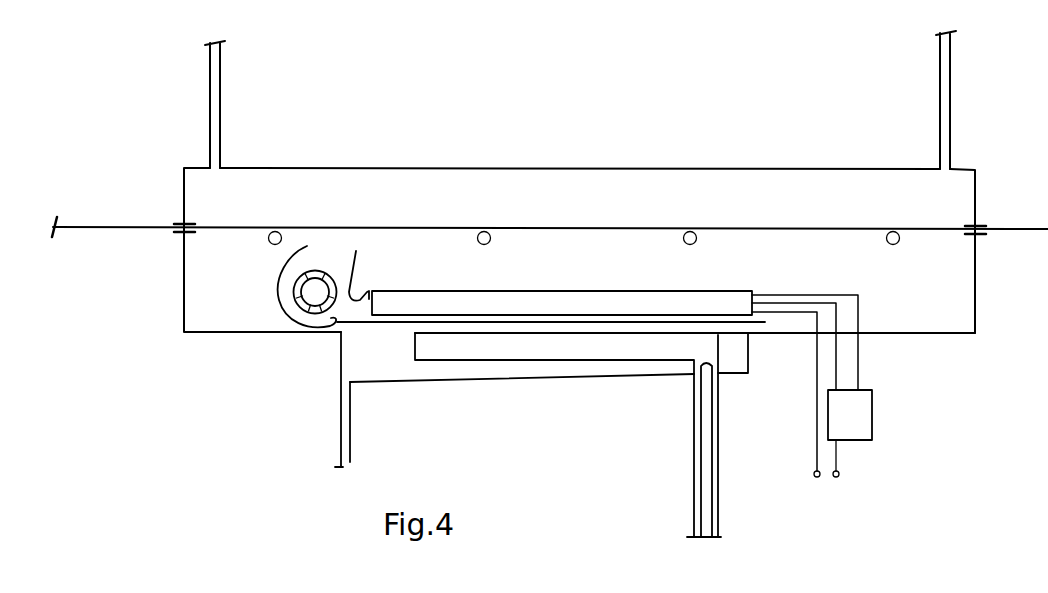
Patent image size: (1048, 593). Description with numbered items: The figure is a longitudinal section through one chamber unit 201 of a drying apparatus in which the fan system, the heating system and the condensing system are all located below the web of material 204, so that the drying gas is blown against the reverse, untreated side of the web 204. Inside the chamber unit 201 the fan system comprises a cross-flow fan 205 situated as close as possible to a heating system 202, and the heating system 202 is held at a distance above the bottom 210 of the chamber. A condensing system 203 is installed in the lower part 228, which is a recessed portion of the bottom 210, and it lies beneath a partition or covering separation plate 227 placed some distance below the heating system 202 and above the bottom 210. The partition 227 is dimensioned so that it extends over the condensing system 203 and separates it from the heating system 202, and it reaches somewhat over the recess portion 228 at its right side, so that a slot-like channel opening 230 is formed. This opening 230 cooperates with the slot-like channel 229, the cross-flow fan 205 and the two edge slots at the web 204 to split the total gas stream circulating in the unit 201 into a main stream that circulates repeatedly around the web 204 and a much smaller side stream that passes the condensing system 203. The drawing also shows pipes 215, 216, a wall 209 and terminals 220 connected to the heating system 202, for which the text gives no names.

The chamber unit 201 is at (975, 284).
The heating system 202 is at (513, 298).
The condensing system 203 is at (454, 353).
The web of material 204 is at (785, 229).
The cross-flow fan 205 is at (278, 279).
The side guide wall 209 is at (350, 441).
The bottom 210 is at (912, 336).
The outlet pipe 215 is at (951, 108).
The inlet pipe 216 is at (220, 106).
The electrical terminals 220 is at (820, 484).
The covering separation plate 227 is at (368, 336).
The lower part 228 is at (598, 368).
The slot-like channel 229 is at (330, 327).
The slot-like channel opening 230 is at (748, 340).